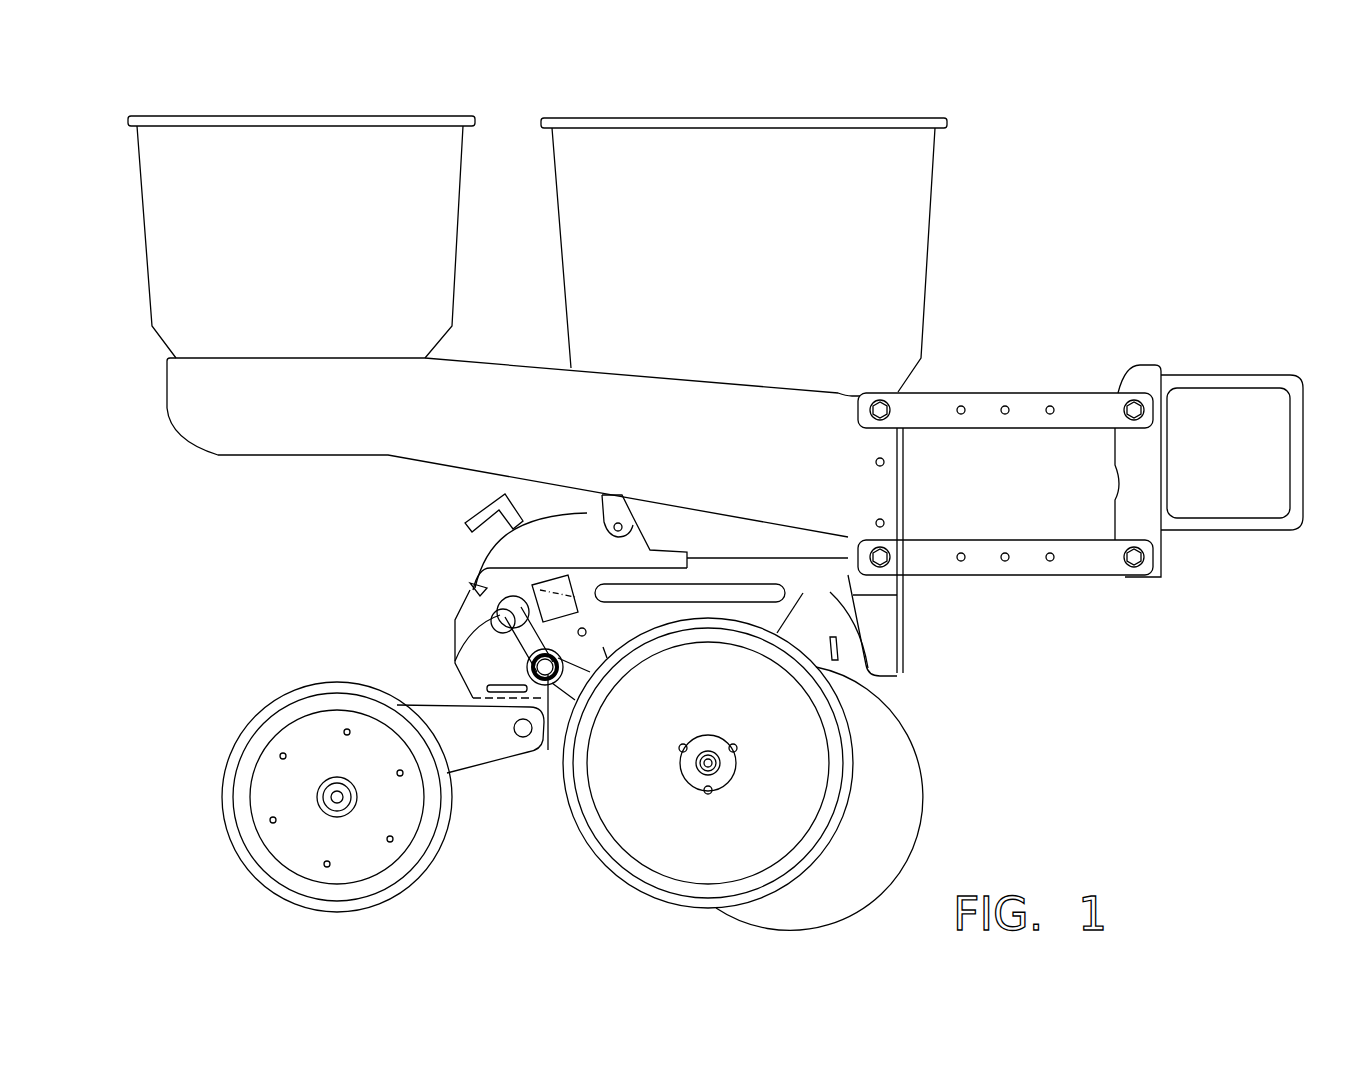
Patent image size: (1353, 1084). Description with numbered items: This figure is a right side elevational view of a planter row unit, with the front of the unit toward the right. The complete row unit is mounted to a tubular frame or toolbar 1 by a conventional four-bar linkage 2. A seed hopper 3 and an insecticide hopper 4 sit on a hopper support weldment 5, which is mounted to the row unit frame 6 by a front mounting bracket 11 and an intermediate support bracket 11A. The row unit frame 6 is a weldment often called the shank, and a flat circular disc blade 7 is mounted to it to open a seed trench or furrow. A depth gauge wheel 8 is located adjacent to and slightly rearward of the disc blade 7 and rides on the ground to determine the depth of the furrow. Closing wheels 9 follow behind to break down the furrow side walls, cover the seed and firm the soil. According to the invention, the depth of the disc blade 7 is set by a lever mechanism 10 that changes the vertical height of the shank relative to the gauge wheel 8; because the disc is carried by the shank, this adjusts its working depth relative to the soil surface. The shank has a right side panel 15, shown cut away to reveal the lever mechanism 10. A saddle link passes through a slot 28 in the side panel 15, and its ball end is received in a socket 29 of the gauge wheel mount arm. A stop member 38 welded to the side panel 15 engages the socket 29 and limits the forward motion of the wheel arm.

The tubular frame or toolbar 1 is at (1200, 385).
The four-bar linkage 2 is at (990, 393).
The seed hopper 3 is at (875, 203).
The insecticide hopper 4 is at (427, 247).
The hopper support weldment 5 is at (225, 438).
The row unit frame 6 is at (826, 620).
The disc blade 7 is at (913, 811).
The depth gauge wheel 8 is at (612, 877).
The closing wheels 9 is at (265, 714).
The lever mechanism 10 is at (468, 545).
The front mounting bracket 11 is at (905, 500).
The intermediate support bracket 11A is at (597, 518).
The side panel 15 is at (618, 637).
The slot 28 is at (455, 661).
The socket 29 is at (500, 614).
The stop member 38 is at (473, 587).